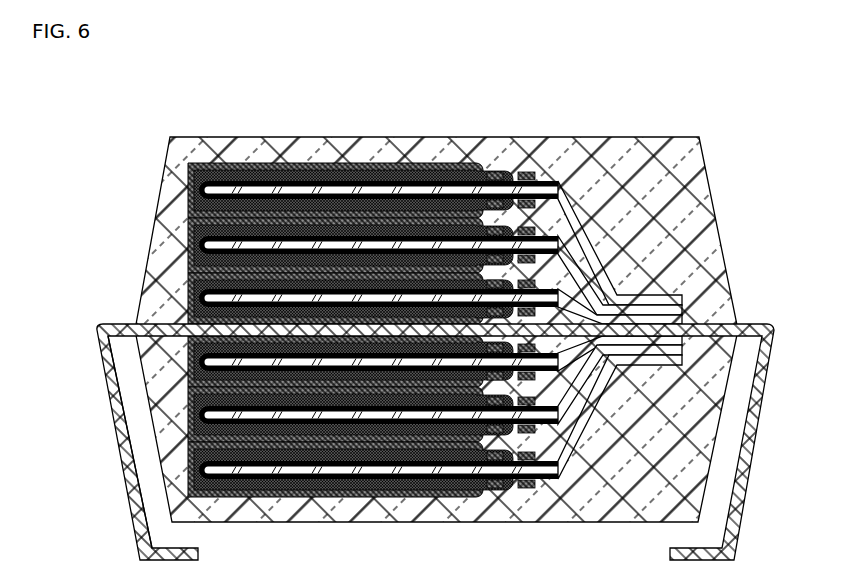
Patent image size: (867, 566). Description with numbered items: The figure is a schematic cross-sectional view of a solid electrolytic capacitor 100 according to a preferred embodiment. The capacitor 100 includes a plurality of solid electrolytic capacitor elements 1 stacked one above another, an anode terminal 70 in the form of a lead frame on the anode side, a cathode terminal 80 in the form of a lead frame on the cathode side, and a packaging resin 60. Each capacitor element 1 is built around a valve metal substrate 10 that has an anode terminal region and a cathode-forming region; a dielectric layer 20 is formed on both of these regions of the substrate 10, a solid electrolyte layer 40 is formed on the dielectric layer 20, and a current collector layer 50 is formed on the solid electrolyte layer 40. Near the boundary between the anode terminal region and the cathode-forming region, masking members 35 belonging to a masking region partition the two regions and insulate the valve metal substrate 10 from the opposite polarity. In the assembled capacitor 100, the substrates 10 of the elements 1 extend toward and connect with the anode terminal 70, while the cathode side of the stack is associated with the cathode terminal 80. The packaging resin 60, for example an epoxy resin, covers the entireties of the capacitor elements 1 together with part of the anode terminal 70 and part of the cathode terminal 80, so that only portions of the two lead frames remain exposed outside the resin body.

The solid electrolytic capacitor element 1 is at (373, 292).
The valve metal substrate 10 is at (413, 189).
The dielectric layer 20 is at (366, 183).
The masking member 35 is at (497, 176).
The solid electrolyte layer 40 is at (312, 177).
The current collector layer 50 is at (260, 166).
The packaging resin 60 is at (698, 223).
The anode terminal 70 is at (728, 528).
The cathode terminal 80 is at (112, 392).
The solid electrolytic capacitor 100 is at (711, 110).